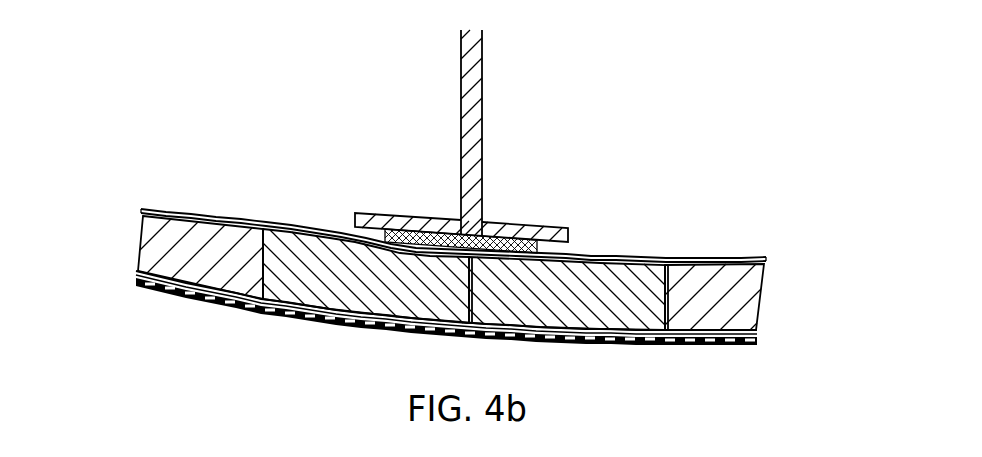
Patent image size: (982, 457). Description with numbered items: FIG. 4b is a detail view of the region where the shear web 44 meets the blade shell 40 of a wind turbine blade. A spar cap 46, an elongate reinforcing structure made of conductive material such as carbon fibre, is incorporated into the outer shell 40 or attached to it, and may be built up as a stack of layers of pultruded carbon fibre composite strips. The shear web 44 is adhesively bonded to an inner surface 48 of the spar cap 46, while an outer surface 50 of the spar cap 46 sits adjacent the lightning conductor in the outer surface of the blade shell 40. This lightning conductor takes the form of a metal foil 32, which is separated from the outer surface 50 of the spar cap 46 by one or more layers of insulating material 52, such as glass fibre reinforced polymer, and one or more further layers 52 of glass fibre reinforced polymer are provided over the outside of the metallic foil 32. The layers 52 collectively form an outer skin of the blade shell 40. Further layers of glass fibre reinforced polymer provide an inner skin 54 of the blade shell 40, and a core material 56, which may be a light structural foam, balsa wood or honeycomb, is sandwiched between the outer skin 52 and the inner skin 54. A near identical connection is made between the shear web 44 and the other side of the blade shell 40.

The metal foil 32 is at (348, 327).
The blade shell 40 is at (160, 201).
The shear web 44 is at (484, 41).
The spar cap 46 is at (614, 279).
The inner surface 48 is at (569, 233).
The outer surface 50 is at (313, 300).
The layers of insulating material 52 is at (769, 332).
The inner skin 54 is at (751, 247).
The core material 56 is at (163, 257).